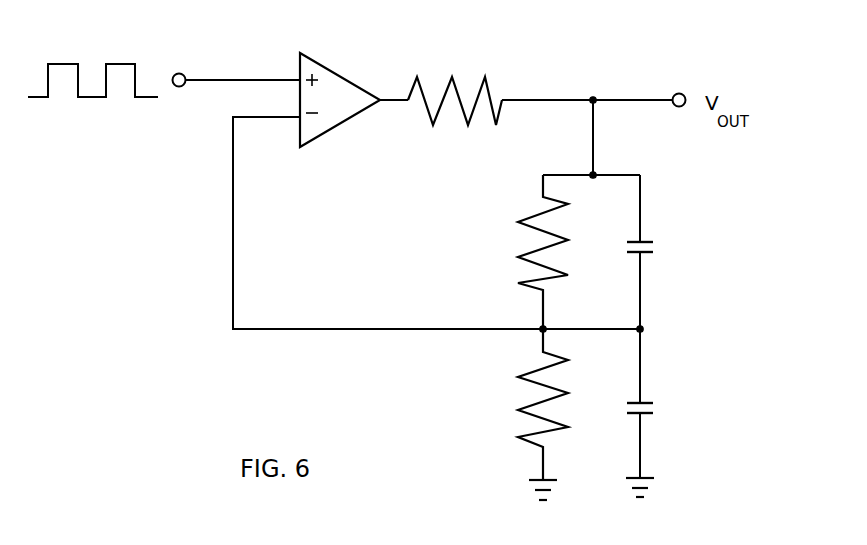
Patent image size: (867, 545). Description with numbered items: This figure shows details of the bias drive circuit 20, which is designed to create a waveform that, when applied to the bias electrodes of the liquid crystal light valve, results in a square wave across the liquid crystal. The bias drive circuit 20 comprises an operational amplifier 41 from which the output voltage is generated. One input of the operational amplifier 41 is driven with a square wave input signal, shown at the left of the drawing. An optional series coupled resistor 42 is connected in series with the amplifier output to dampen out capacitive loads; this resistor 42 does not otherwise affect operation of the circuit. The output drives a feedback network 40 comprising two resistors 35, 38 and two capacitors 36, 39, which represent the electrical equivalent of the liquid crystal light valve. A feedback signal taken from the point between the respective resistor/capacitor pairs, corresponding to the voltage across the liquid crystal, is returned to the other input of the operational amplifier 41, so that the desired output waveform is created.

The bias drive circuit 20 is at (148, 364).
The resistor 35 is at (528, 250).
The capacitor 36 is at (652, 255).
The resistor 38 is at (530, 409).
The capacitor 39 is at (653, 402).
The feedback network 40 is at (616, 300).
The operational amplifier 41 is at (338, 74).
The series coupled resistor 42 is at (452, 79).